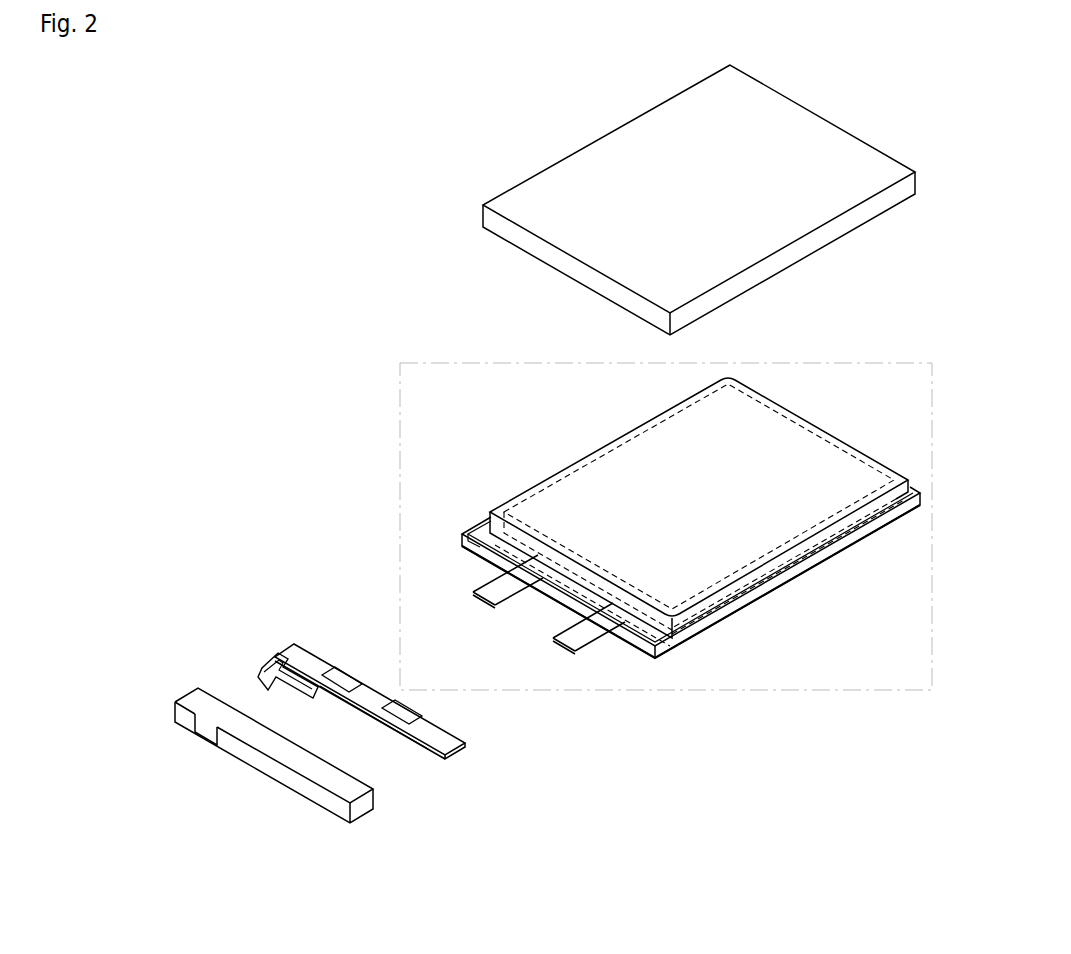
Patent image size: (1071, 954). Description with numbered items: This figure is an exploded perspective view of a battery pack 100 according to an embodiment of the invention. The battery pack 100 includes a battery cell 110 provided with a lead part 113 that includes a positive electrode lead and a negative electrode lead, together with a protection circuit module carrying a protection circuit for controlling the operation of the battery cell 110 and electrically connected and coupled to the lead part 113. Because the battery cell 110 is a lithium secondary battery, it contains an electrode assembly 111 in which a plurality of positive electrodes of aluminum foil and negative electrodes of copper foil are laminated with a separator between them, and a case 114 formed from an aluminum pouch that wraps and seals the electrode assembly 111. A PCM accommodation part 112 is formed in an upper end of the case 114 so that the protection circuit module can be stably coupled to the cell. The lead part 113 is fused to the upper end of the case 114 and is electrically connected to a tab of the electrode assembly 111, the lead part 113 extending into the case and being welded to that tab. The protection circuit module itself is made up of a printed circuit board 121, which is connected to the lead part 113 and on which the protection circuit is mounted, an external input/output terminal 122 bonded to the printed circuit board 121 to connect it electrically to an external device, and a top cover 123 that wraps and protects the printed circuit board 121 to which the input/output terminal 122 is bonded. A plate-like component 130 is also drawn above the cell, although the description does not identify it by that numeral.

The battery pack 100 is at (308, 309).
The battery cell 110 is at (688, 692).
The electrode assembly 111 is at (668, 416).
The PCM accommodation part 112 is at (484, 548).
The lead part 113 is at (497, 591).
The case 114 is at (585, 462).
The printed circuit board 121 is at (293, 645).
The external input/output terminal 122 is at (266, 660).
The top cover 123 is at (194, 694).
The cover plate 130 is at (576, 170).